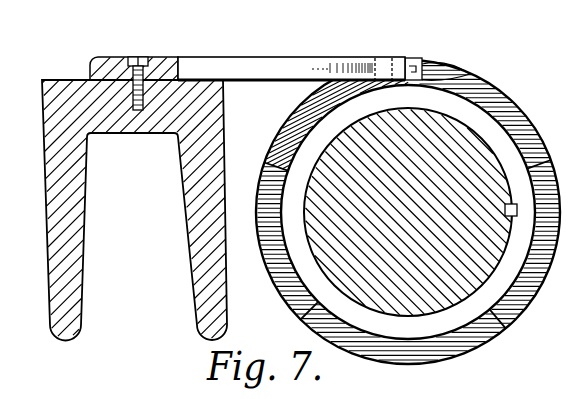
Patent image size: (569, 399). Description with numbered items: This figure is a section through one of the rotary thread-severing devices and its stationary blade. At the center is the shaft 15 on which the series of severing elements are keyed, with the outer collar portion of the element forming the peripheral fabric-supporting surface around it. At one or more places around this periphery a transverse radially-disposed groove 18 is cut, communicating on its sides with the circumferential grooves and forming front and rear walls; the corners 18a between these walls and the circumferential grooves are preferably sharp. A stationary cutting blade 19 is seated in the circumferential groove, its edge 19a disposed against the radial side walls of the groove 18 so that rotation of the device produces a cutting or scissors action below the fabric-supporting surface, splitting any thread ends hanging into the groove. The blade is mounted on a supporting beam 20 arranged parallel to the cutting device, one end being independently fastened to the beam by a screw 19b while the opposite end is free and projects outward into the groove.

The shaft 15 is at (407, 280).
The transverse radially-disposed groove 18 is at (412, 58).
The corner 18a is at (432, 75).
The stationary cutting blade 19 is at (263, 66).
The edge 19a is at (422, 61).
The screw 19b is at (157, 43).
The supporting beam 20 is at (73, 298).